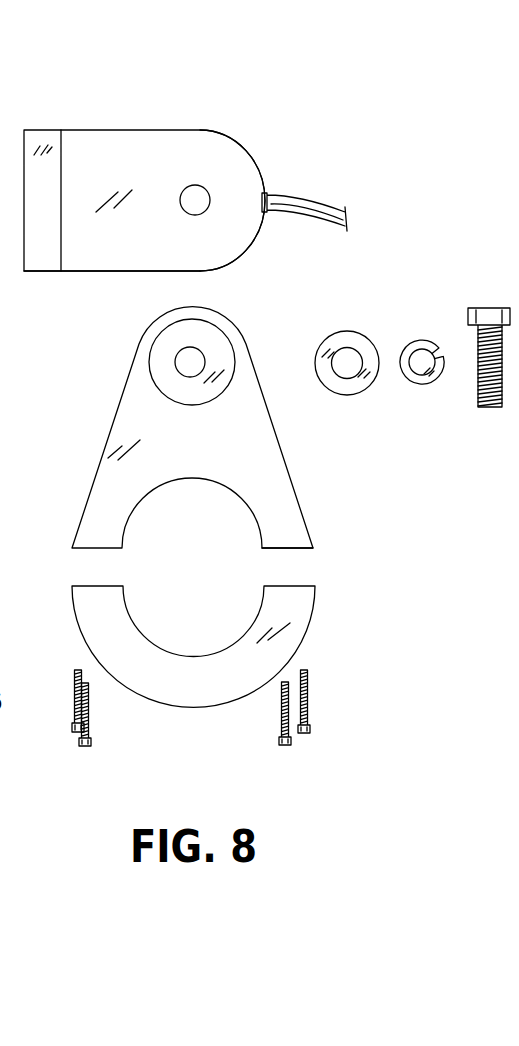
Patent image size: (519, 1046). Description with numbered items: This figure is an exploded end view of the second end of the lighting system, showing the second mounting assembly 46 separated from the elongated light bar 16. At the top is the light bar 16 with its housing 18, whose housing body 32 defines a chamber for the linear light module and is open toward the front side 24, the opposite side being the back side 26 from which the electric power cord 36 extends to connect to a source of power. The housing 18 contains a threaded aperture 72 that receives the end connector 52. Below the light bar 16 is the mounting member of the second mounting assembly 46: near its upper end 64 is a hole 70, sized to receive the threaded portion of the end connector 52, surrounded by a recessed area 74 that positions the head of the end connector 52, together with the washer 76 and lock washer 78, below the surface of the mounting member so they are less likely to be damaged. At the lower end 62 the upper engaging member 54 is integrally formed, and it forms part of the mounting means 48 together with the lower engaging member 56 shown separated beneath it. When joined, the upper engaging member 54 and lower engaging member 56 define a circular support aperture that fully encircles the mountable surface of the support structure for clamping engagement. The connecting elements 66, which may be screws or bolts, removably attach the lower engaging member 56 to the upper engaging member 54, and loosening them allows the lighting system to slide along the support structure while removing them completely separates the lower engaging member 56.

The elongated light bar 16 is at (106, 258).
The housing 18 is at (128, 148).
The front side 24 is at (180, 176).
The back side 26 is at (260, 140).
The housing body 32 is at (74, 150).
The electric power cord 36 is at (310, 205).
The second mounting assembly 46 is at (262, 400).
The mounting means 48 is at (245, 677).
The end connector 52 is at (492, 318).
The upper engaging member 54 is at (88, 530).
The lower engaging member 56 is at (209, 687).
The lower end 62 is at (333, 538).
The upper end 64 is at (219, 417).
The connecting elements 66 is at (308, 697).
The hole 70 is at (176, 363).
The threaded aperture 72 is at (194, 185).
The recessed area 74 is at (207, 337).
The washer 76 is at (357, 383).
The lock washer 78 is at (417, 378).